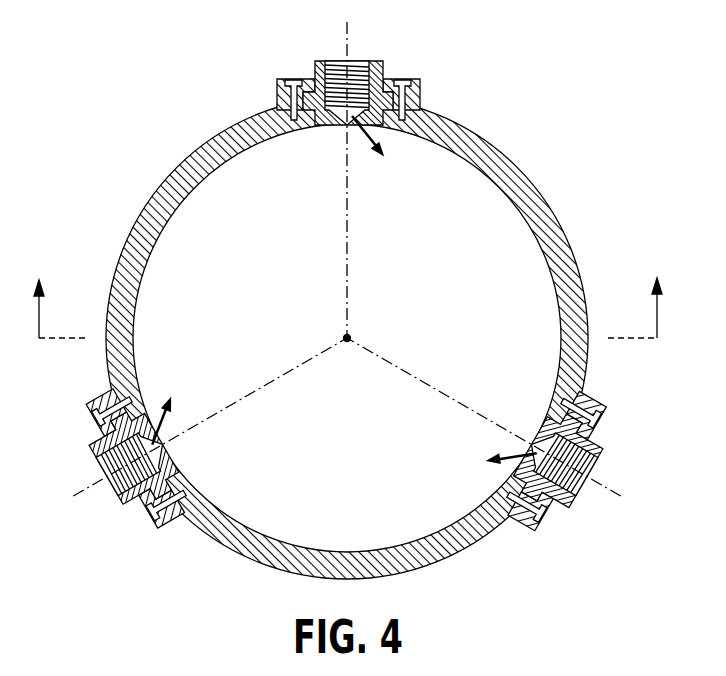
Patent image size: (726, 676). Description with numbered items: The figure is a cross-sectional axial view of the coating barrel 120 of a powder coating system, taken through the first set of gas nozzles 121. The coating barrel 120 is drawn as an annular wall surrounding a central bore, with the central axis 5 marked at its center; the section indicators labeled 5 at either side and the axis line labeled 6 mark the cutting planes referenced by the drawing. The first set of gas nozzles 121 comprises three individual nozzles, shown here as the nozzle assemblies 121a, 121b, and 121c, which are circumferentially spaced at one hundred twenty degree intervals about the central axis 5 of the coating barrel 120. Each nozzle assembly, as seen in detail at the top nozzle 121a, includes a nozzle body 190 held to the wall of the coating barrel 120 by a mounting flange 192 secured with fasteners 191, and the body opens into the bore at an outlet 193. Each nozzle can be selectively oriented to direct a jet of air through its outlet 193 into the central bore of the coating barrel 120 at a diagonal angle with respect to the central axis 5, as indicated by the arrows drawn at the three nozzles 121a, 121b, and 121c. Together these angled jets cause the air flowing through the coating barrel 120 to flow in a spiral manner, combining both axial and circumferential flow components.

The central axis 5 is at (345, 336).
The section line 6- 6 is at (343, 44).
The coating barrel 120 is at (517, 162).
The first set of gas nozzles 121 is at (353, 296).
The first nozzle assembly 121a is at (366, 175).
The second nozzle assembly 121b is at (576, 510).
The third nozzle assembly 121c is at (124, 512).
The nozzle body 190 is at (314, 70).
The fastener 191 is at (406, 90).
The mounting flange 192 is at (418, 84).
The nozzle outlet 193 is at (344, 123).